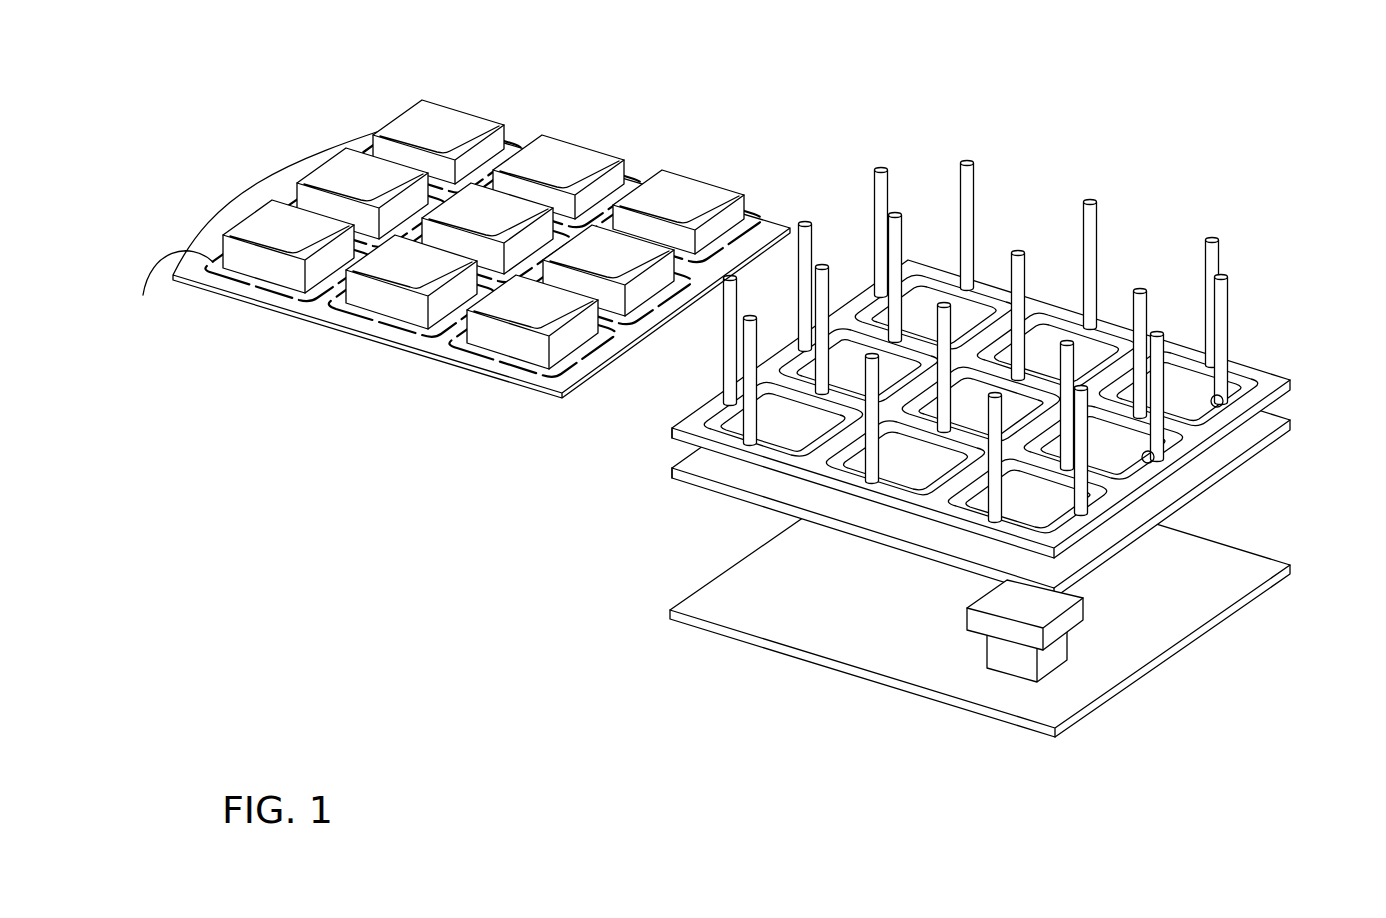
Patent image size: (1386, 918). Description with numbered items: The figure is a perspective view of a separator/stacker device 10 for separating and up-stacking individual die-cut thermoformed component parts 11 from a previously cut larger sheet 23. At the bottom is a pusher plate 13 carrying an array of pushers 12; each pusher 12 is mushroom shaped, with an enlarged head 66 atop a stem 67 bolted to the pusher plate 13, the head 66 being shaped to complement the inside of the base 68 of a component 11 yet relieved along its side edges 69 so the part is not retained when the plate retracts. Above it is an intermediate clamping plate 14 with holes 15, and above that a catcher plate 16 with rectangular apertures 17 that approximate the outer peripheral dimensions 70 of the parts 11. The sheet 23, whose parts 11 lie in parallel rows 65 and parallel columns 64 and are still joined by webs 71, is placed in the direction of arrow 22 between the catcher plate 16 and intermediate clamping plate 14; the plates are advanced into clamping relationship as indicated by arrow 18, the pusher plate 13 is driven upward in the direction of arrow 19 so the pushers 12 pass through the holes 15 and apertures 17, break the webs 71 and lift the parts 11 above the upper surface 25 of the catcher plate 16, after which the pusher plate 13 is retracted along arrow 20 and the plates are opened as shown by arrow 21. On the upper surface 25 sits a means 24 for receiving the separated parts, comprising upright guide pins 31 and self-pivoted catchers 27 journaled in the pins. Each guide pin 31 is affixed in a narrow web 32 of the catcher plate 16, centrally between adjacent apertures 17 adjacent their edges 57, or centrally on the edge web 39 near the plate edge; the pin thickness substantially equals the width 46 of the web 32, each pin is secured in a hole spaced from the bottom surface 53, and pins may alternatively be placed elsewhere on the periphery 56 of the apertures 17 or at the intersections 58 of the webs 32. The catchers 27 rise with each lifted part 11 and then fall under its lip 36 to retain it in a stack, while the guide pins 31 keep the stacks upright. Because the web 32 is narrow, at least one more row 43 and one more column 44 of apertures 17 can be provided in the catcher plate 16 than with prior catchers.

The separator/stacker device 10 is at (1234, 178).
The individual die-cut component part 11 is at (483, 202).
The pusher 12 is at (1080, 683).
The pusher plate 13 is at (903, 662).
The intermediate clamping plate 14 is at (1250, 433).
The hole 15 is at (975, 540).
The catcher plate 16 is at (981, 358).
The aperture 17 is at (1058, 332).
The arrow 18 is at (1312, 402).
The arrow 19 is at (1310, 625).
The arrow 20 is at (1270, 660).
The arrow 21 is at (1316, 437).
The arrow 22 is at (247, 135).
The previously cut larger sheet 23 is at (609, 87).
The means for receiving 24 is at (1084, 146).
The upper surface 25 is at (847, 310).
The self-pivoted catcher 27 is at (1220, 407).
The guide pin 31 is at (1204, 256).
The narrow web 32 is at (790, 383).
The lip 36 is at (447, 245).
The edge web 39 is at (1052, 333).
The row of apertures 43 is at (1281, 266).
The column of apertures 44 is at (816, 186).
The width of narrow web 46 is at (925, 411).
The bottom surface 53 is at (687, 450).
The periphery 56 is at (1229, 362).
The edge of aperture 57 is at (810, 427).
The intersections of webs 58 is at (962, 355).
The parallel columns 64 is at (326, 76).
The parallel rows 65 is at (205, 349).
The enlarged head 66 is at (1080, 615).
The stem 67 is at (1057, 655).
The base 68 is at (279, 245).
The side edges 69 is at (1027, 637).
The outer peripheral dimensions 70 is at (223, 280).
The webs 71 is at (560, 372).